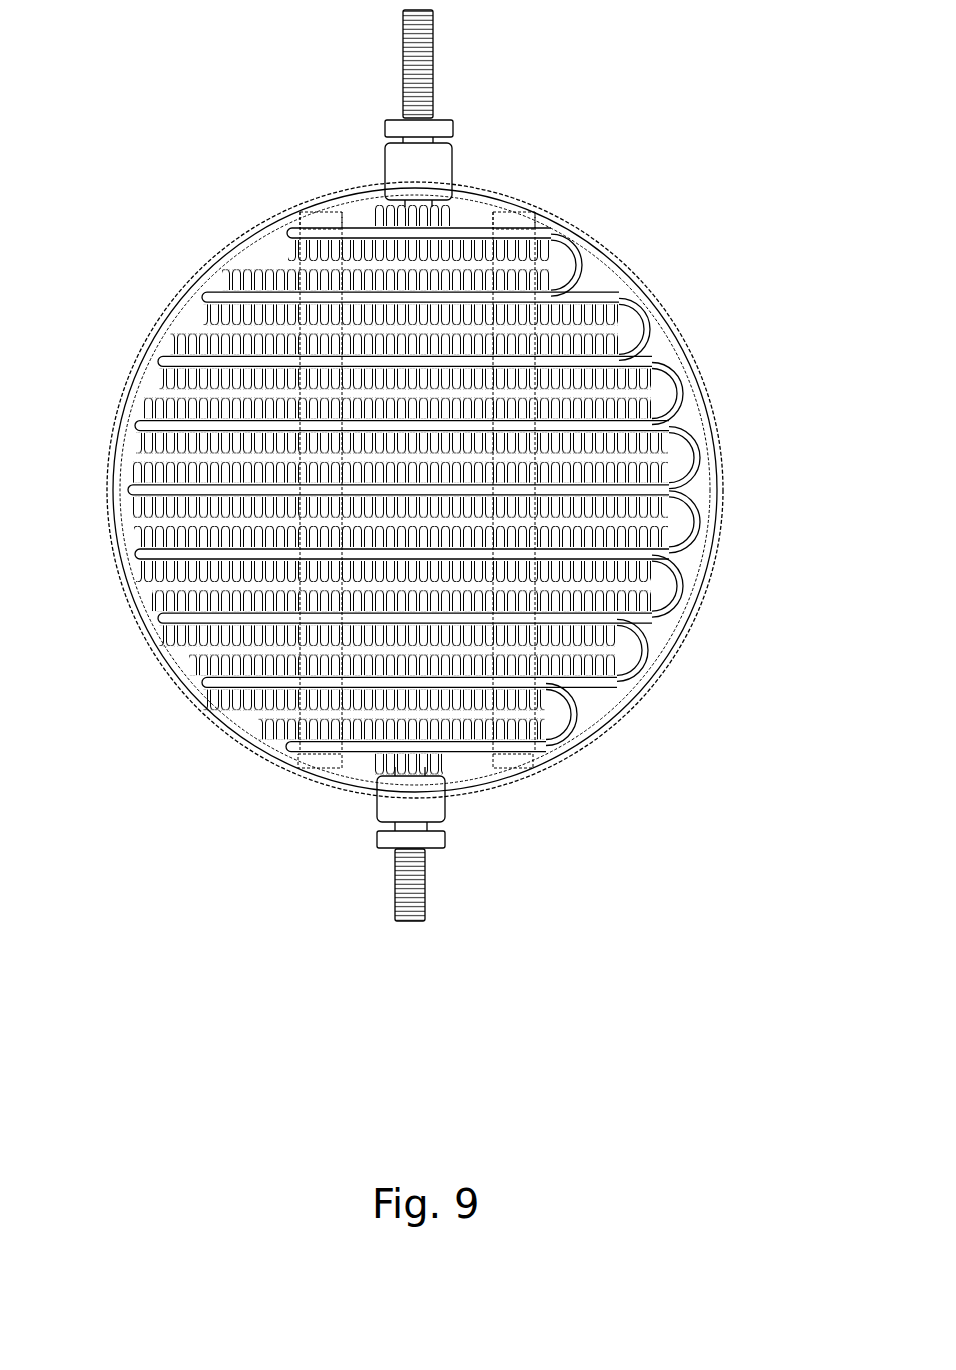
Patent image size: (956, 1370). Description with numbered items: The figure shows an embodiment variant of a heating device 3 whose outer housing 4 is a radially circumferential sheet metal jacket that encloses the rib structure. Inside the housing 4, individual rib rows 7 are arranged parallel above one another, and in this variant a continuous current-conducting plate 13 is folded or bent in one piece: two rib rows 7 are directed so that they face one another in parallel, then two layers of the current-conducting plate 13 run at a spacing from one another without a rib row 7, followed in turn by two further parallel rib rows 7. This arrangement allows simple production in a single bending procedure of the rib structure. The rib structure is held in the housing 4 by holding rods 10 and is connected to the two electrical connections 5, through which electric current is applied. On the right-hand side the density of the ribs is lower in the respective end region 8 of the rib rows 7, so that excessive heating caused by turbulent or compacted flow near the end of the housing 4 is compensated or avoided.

The heating device 3 is at (125, 258).
The housing 4 is at (160, 676).
The electrical connections 5 is at (432, 65).
The rib rows 7 is at (670, 537).
The end region 8 is at (481, 483).
The holding rods 10 is at (328, 768).
The current-conducting plate 13 is at (655, 330).